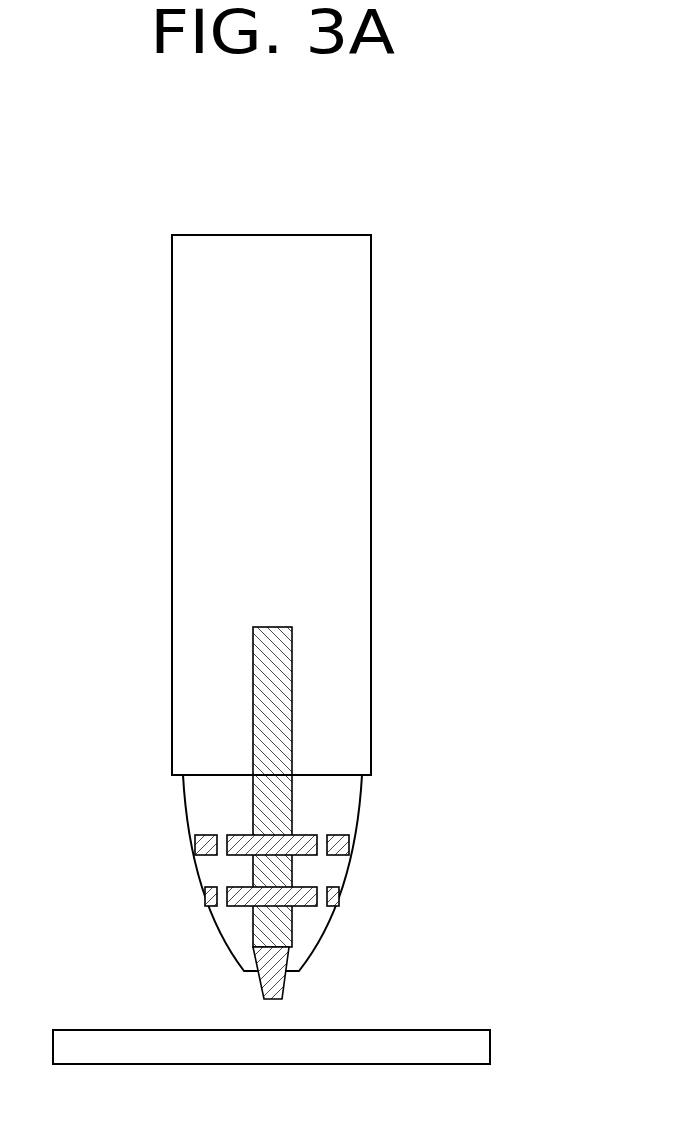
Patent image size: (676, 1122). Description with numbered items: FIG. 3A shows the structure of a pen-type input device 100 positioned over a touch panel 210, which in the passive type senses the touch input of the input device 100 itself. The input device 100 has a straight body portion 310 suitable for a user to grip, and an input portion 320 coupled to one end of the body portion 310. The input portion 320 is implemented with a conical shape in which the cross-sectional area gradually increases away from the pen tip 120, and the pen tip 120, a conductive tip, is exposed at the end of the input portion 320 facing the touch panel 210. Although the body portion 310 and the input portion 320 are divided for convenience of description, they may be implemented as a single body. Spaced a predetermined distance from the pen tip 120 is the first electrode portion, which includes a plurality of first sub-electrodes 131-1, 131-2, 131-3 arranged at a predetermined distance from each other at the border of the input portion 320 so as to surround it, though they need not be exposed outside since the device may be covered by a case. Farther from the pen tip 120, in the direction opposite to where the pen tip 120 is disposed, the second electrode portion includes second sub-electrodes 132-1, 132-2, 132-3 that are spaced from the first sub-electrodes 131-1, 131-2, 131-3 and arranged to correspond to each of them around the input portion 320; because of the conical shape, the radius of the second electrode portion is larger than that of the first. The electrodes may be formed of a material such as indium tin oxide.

The input device 100 is at (293, 146).
The body portion 310 is at (155, 236).
The input portion 320 is at (155, 781).
The pen tip 120 is at (282, 987).
The second sub-electrode 132-1 is at (197, 843).
The second sub-electrode 132-2 is at (285, 834).
The second sub-electrode 132-3 is at (338, 840).
The first sub-electrode 131-1 is at (207, 896).
The first sub-electrode 131-2 is at (315, 900).
The first sub-electrode 131-3 is at (332, 892).
The touch panel 210 is at (490, 1041).